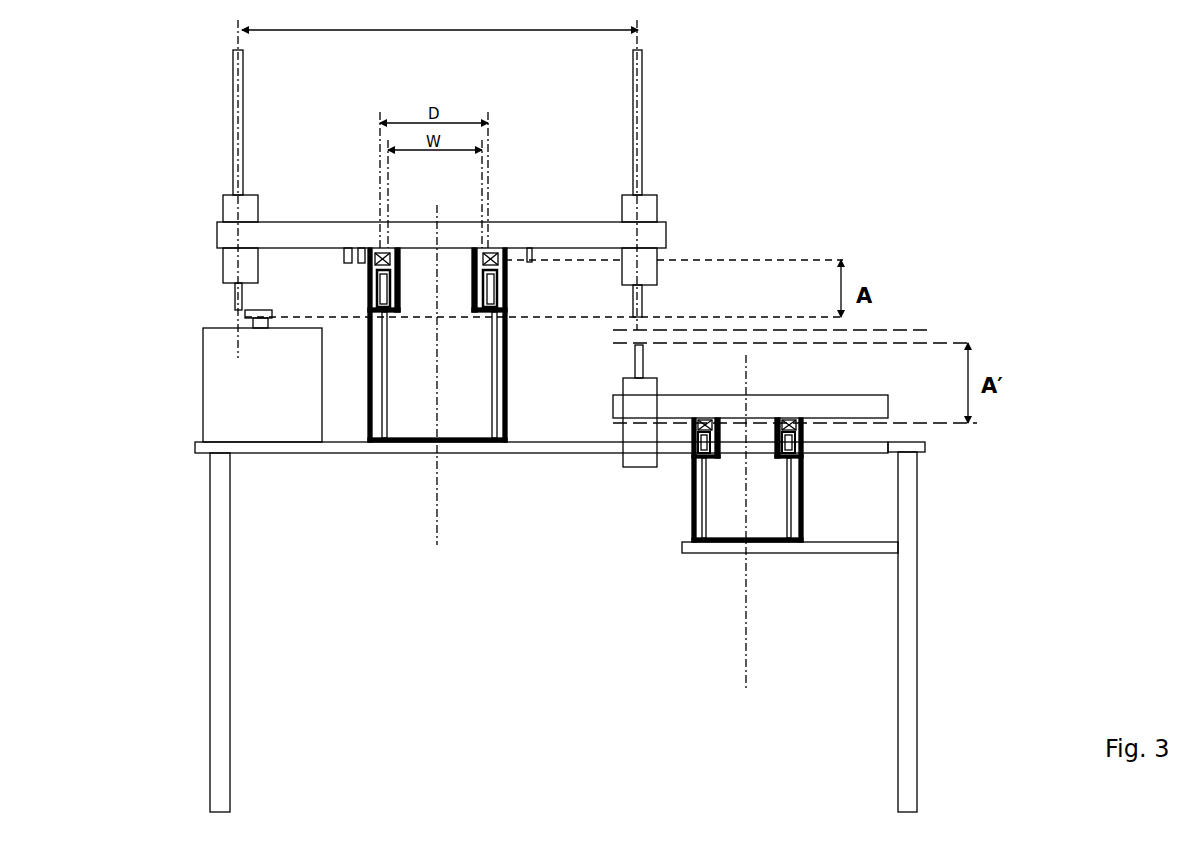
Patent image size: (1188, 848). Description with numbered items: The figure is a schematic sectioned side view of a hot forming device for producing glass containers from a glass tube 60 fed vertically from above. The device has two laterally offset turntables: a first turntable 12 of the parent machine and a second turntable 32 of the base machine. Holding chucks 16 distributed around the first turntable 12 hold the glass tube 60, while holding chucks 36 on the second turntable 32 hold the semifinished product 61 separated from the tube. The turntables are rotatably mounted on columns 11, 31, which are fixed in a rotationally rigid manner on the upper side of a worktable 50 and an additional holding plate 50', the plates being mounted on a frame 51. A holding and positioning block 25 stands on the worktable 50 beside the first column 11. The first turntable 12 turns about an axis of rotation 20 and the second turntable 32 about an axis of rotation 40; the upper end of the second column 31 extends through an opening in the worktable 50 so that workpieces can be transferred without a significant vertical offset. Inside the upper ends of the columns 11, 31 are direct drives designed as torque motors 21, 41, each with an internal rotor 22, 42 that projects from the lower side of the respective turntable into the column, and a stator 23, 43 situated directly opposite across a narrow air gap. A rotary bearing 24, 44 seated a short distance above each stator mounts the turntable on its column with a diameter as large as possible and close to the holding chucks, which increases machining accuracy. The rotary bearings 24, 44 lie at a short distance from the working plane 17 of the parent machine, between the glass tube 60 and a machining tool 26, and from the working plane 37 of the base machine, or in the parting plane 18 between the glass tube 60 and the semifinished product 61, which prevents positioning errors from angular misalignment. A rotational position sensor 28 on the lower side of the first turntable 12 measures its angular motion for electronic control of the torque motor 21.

The column 11 is at (498, 372).
The turntable 12 is at (540, 222).
The holding chuck 16 is at (228, 207).
The working plane 17 is at (717, 315).
The parting plane 18 is at (887, 328).
The axis of rotation of main ring 20 is at (438, 489).
The torque motor 21 is at (392, 308).
The rotor 22 is at (485, 282).
The stator 23 is at (488, 290).
The rotary bearing 24 is at (497, 258).
The holding and positioning block 25 is at (203, 385).
The tool 26 is at (258, 308).
The rotational position sensor 28 is at (365, 263).
The column or support 31 is at (790, 498).
The turntable 32 is at (780, 410).
The holding chuck 36 is at (657, 380).
The working plane (base machine) 37 is at (930, 332).
The axis of rotation 40 is at (745, 640).
The torque motor 41 is at (695, 457).
The rotor 42 is at (775, 445).
The stator 43 is at (800, 453).
The rotary bearing 44 is at (800, 425).
The worktable 50 is at (914, 426).
The additional holding plate 50' is at (790, 582).
The frame 51 is at (905, 593).
The glass tube 60 is at (233, 90).
The semifinished product 61 is at (643, 360).